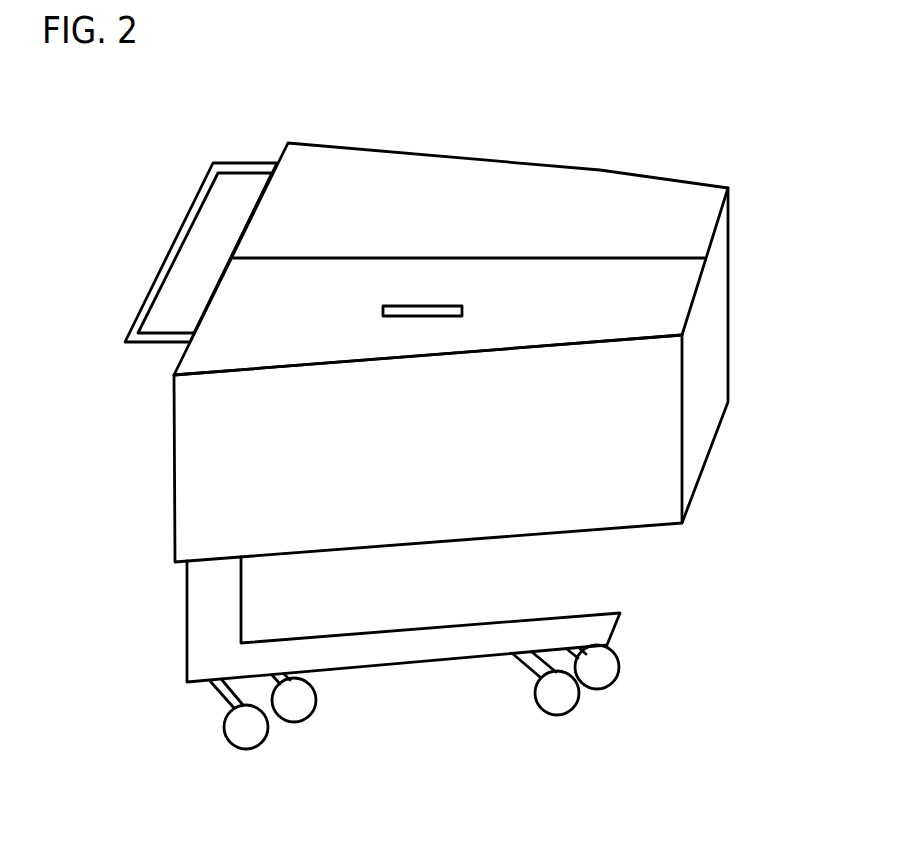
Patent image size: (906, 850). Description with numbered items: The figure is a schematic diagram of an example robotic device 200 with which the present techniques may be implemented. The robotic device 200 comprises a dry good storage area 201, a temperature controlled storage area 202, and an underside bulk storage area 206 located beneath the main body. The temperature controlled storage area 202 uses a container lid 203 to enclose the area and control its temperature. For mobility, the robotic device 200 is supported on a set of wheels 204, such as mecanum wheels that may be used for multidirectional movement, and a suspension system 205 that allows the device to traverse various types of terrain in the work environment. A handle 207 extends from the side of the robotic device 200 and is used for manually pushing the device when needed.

The robotic device 200 is at (441, 473).
The dry good storage area 201 is at (451, 259).
The temperature controlled storage area 202 is at (428, 430).
The container lid 203 is at (427, 325).
The set of wheels 204 is at (268, 750).
The suspension system 205 is at (512, 670).
The underside bulk storage area 206 is at (403, 619).
The handle 207 is at (190, 269).